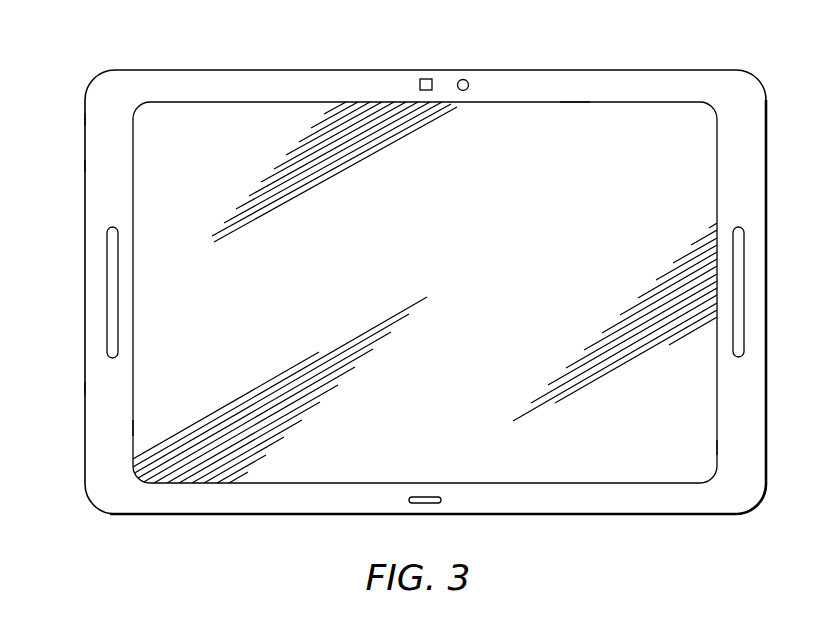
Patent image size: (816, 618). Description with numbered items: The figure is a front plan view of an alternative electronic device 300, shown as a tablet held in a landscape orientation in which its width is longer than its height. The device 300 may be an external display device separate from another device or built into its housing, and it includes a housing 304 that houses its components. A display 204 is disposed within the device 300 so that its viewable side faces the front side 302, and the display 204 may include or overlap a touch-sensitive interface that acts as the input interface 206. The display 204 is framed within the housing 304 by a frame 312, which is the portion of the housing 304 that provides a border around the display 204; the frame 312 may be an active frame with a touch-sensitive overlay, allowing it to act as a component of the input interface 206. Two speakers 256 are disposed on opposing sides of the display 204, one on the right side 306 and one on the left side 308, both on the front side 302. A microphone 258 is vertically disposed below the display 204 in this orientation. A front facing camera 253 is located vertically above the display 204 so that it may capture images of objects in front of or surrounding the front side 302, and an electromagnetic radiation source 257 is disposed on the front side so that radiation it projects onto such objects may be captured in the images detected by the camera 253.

The electronic device 300 is at (86, 60).
The front side 302 is at (95, 388).
The housing 304 is at (85, 164).
The right side 306 is at (717, 453).
The left side 308 is at (133, 426).
The frame 312 is at (96, 119).
The display 204 is at (570, 101).
The input interface 206 is at (277, 101).
The front facing camera 253 is at (423, 79).
The electromagnetic radiation source 257 is at (465, 79).
The speakers 256 is at (107, 290).
The microphone 258 is at (424, 503).